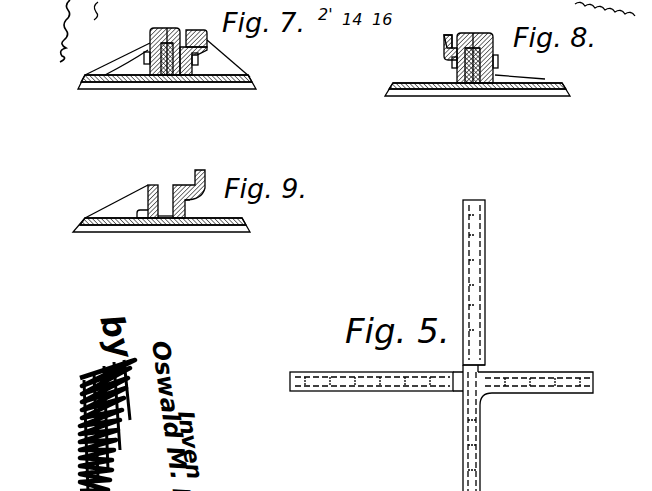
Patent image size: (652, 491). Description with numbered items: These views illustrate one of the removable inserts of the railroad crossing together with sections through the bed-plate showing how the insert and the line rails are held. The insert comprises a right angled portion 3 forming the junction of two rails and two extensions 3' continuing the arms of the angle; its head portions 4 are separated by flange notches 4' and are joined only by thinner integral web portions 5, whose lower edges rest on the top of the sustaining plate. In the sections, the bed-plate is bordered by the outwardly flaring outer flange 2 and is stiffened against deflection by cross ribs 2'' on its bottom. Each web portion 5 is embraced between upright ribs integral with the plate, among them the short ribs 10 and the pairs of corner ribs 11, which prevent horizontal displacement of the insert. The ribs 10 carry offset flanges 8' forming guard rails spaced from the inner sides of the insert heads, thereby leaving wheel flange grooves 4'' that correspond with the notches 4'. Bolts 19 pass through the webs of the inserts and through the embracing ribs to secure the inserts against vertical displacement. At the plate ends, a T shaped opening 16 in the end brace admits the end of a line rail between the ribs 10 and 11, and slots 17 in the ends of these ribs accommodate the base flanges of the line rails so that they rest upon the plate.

In FIG. 7, the outer flange 2 is at (175, 81).
In FIG. 8, the outer flange 2 is at (471, 101).
In FIG. 8, the cross ribs 2'' is at (477, 107).
In FIG. 9, the cross ribs 2'' is at (161, 243).
In FIG. 5, the right angled portion 3 is at (492, 345).
In FIG. 8, the extensions 3' is at (483, 45).
In FIG. 5, the extensions 3' is at (371, 400).
In FIG. 5, the head portions 4 is at (535, 364).
In FIG. 5, the flange notches 4' is at (456, 367).
In FIG. 8, the wheel flange grooves 4'' is at (463, 27).
In FIG. 7, the web portions 5 is at (167, 78).
In FIG. 8, the web portions 5 is at (473, 80).
In FIG. 8, the offset flanges 8' is at (433, 44).
In FIG. 9, the offset flanges 8' is at (199, 182).
In FIG. 7, the short ribs 10 is at (199, 64).
In FIG. 8, the short ribs 10 is at (458, 78).
In FIG. 9, the short ribs 10 is at (190, 200).
In FIG. 7, the corner ribs 11 is at (146, 58).
In FIG. 8, the corner ribs 11 is at (545, 79).
In FIG. 9, the corner ribs 11 is at (150, 189).
In FIG. 9, the T shaped opening 16 is at (146, 219).
In FIG. 9, the slots 17 is at (190, 214).
In FIG. 7, the bolts 19 is at (146, 63).
In FIG. 8, the bolts 19 is at (498, 62).